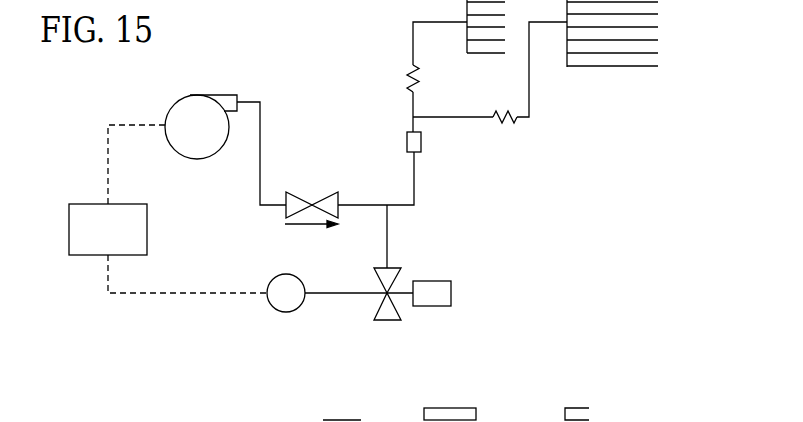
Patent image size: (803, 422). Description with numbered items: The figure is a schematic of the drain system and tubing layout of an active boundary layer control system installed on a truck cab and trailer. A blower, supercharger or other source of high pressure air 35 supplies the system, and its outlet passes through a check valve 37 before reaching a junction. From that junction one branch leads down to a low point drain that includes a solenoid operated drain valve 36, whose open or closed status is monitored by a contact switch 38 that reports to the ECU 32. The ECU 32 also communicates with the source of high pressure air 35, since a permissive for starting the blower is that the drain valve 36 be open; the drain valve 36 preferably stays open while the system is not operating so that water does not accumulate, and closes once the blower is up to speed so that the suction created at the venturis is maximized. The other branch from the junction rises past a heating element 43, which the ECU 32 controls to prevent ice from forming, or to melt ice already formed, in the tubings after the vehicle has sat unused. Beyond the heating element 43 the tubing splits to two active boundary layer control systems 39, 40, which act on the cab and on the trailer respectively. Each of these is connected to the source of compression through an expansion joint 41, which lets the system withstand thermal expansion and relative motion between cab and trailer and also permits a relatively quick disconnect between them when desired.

The ECU 32 is at (78, 204).
The source of high pressure air 35 is at (198, 108).
The solenoid operated drain valve 36 is at (451, 290).
The check valve 37 is at (302, 193).
The contact switch 38 is at (283, 313).
The active boundary layer control system 39 is at (483, 48).
The active boundary layer control system 40 is at (623, 60).
The expansion joint 41 is at (405, 82).
The heating element 43 is at (407, 141).